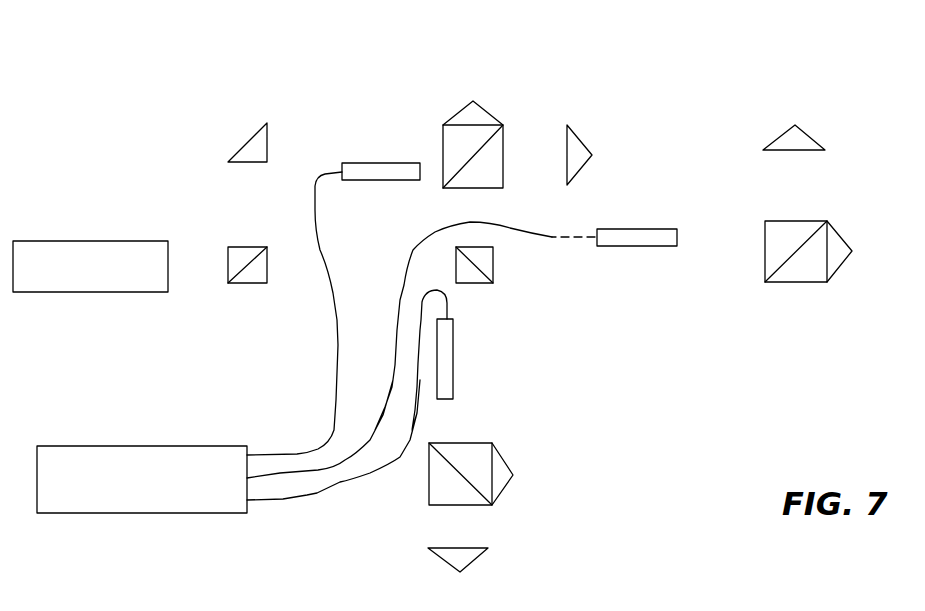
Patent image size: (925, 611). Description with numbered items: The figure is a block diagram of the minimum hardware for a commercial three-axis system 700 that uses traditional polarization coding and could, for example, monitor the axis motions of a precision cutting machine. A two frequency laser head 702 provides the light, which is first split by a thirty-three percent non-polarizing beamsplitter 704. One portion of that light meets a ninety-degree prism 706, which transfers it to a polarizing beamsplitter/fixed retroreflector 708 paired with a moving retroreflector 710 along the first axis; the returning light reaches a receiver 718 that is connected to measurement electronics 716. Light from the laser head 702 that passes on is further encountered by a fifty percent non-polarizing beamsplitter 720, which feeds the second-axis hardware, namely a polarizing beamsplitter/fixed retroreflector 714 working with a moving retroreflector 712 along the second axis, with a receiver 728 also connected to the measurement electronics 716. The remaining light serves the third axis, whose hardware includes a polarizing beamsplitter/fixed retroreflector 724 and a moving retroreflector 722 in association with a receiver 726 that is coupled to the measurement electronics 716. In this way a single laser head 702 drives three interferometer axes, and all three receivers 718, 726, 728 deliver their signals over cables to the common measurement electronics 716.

The three-axis system 700 is at (110, 90).
The two frequency laser head 702 is at (90, 266).
The 33% non-polarizing beamsplitter 704 is at (253, 285).
The 90-degree prism 706 is at (262, 130).
The polarizing beamsplitter/fixed retroreflector 708 is at (443, 124).
The moving retroreflector 710 is at (583, 143).
The moving retroreflector 712 is at (770, 151).
The polarizing beamsplitter/fixed retroreflector 714 is at (795, 283).
The measurement electronics 716 is at (145, 513).
The receiver 718 is at (393, 180).
The 50% non-polarizing beamsplitter 720 is at (486, 284).
The moving retroreflector 722 is at (456, 567).
The polarizing beamsplitter/fixed retroreflector 724 is at (507, 463).
The receiver 726 is at (453, 363).
The receiver 728 is at (598, 226).